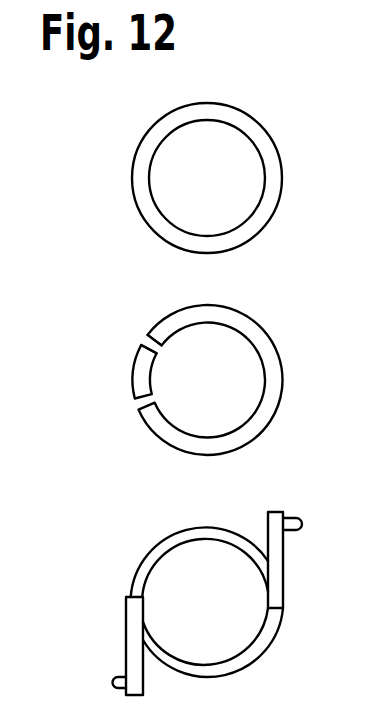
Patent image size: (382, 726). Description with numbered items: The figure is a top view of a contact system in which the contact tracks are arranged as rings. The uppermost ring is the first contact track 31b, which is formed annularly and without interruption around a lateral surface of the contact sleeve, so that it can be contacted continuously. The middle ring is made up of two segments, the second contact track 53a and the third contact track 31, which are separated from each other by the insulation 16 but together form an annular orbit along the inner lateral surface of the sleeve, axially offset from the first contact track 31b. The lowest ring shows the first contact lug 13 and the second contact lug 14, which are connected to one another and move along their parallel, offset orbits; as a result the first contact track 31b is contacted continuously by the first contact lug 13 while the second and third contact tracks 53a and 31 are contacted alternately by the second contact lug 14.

The first contact track 31b is at (143, 167).
The insulation 16 is at (146, 346).
The third contact track 31 is at (138, 377).
The second contact track 53a is at (156, 425).
The first contact lug 13 is at (280, 543).
The second contact lug 14 is at (136, 639).